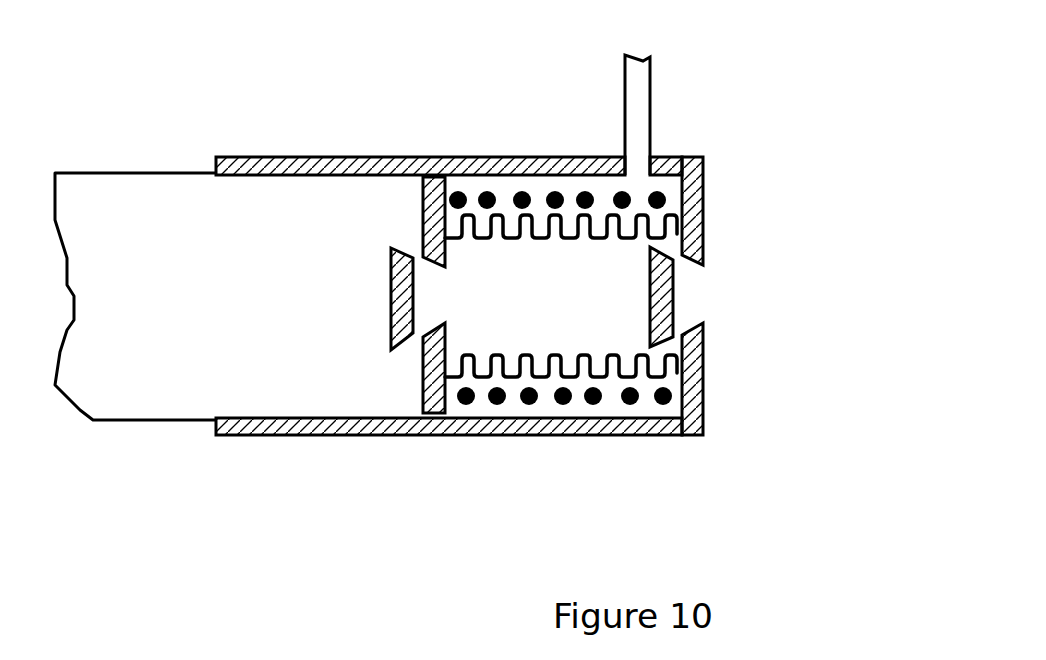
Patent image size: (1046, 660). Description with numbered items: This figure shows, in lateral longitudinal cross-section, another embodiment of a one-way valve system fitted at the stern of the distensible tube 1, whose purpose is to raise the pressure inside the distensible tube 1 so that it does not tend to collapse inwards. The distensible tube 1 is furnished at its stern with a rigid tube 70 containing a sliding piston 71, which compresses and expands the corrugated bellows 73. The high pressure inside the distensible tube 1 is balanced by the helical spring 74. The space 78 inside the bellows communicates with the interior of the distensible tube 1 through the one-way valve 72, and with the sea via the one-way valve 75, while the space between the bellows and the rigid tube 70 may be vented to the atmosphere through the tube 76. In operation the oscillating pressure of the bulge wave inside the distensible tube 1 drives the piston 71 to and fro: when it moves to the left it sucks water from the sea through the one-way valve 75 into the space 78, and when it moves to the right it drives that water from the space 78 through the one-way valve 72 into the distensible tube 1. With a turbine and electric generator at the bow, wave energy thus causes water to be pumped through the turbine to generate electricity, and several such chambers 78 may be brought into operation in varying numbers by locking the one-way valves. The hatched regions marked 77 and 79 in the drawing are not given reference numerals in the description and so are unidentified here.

The distensible tube 1 is at (142, 172).
The rigid tube 70 is at (228, 437).
The sliding piston 71 is at (420, 403).
The one-way valve 72 is at (391, 330).
The corrugated bellows 73 is at (488, 377).
The helical spring 74 is at (592, 402).
The one-way valve 75 is at (665, 273).
The tube 76 is at (625, 107).
The lumen 77 is at (318, 243).
The space 78 is at (588, 310).
The balls 79 is at (472, 188).